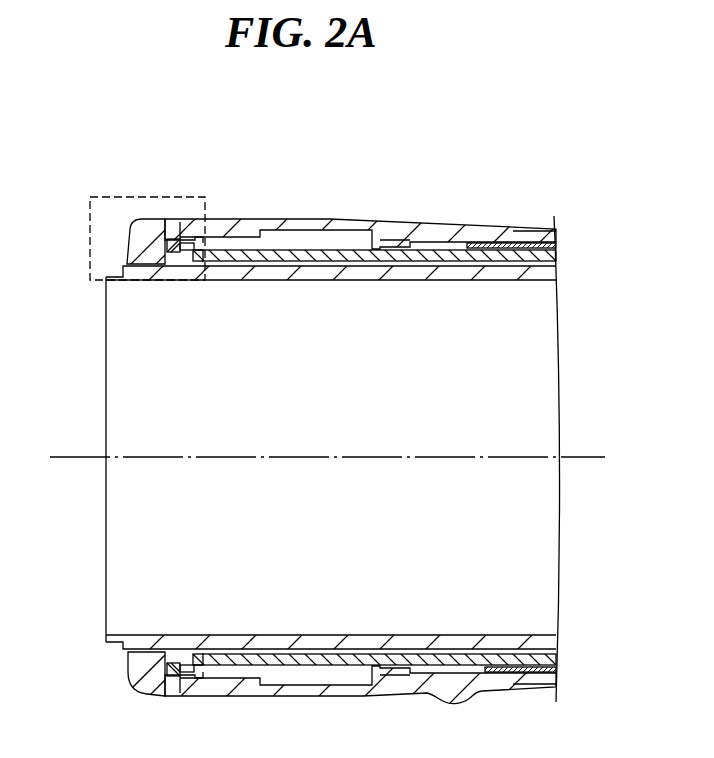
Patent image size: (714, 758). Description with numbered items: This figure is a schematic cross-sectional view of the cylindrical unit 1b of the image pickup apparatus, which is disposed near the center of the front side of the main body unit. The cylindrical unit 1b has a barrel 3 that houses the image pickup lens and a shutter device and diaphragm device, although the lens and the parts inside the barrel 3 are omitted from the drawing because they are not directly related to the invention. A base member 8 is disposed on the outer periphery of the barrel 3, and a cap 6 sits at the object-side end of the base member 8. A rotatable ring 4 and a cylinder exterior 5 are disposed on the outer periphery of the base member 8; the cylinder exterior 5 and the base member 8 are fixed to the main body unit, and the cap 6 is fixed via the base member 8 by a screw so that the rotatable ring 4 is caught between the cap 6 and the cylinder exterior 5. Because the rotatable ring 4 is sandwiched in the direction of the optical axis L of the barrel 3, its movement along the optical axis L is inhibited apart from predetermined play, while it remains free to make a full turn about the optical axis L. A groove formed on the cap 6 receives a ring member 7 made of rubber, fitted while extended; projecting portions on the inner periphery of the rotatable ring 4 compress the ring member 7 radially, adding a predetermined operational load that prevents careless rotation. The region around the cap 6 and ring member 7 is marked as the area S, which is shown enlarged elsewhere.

The cylindrical unit 1b is at (378, 128).
The barrel 3 is at (118, 518).
The rotatable ring 4 is at (291, 223).
The cylinder exterior 5 is at (458, 233).
The cap 6 is at (134, 230).
The ring member 7 is at (170, 246).
The base member 8 is at (556, 253).
The area S is at (147, 194).
The optical axis L is at (317, 460).